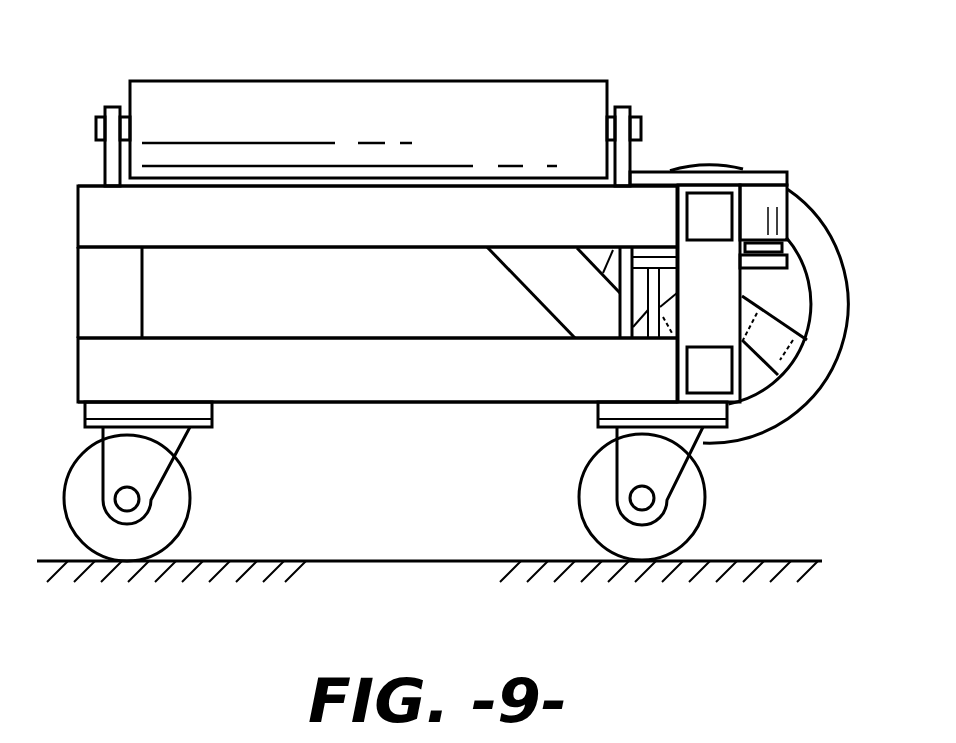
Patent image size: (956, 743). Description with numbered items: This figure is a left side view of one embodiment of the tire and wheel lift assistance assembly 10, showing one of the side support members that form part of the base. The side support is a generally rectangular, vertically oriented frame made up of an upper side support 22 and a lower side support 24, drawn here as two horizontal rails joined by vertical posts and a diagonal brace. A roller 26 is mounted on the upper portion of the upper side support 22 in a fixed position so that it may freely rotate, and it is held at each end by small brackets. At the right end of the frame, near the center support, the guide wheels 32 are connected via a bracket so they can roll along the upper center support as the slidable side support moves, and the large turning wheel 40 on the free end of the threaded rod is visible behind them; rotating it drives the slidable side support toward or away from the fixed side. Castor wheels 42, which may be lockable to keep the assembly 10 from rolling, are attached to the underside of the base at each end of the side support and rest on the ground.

The tire and wheel lift assistance assembly 10 is at (395, 428).
The upper side support 22 is at (315, 226).
The lower side support 24 is at (447, 353).
The roller 26 is at (403, 81).
The guide wheels 32 is at (770, 202).
The turning wheel 40 is at (830, 272).
The castor wheels 42 is at (63, 502).